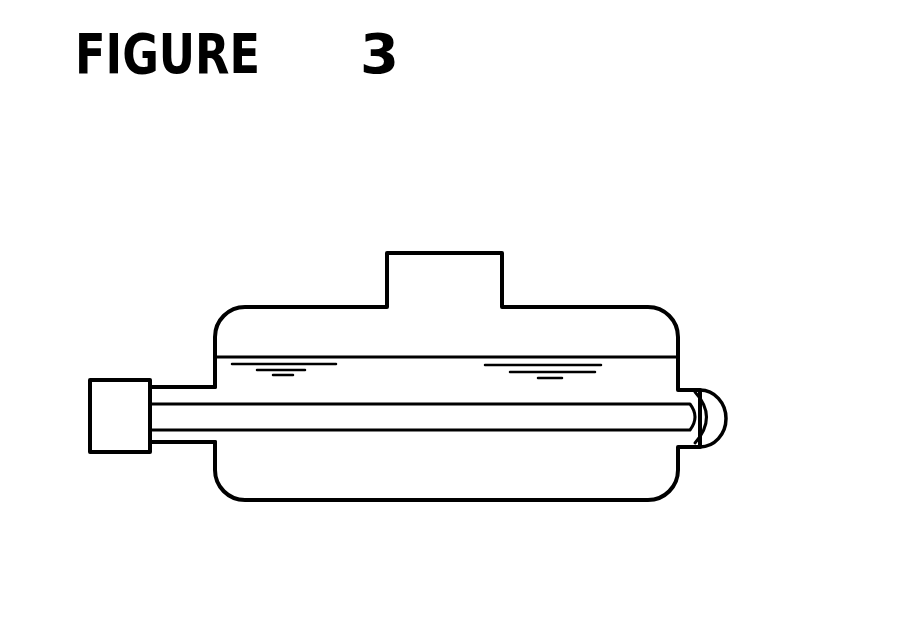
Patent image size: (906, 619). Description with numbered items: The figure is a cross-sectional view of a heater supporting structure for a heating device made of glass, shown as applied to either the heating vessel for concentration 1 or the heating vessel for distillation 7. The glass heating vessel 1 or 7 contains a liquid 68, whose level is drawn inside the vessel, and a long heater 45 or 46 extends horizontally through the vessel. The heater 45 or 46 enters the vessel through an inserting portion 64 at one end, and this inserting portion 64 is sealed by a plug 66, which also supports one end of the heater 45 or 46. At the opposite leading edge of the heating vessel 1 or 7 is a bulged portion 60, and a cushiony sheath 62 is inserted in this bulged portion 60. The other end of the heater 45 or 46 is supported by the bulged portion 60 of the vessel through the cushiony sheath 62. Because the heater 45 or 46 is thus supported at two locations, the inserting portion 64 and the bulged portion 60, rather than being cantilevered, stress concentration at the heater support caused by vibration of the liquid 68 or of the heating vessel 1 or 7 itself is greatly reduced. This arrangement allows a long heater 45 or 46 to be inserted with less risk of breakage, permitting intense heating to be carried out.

The heating vessel for concentration 1 is at (425, 416).
The heating vessel for distillation 7 is at (365, 500).
The heater 45 is at (422, 484).
The heater 46 is at (502, 430).
The bulged portion 60 is at (712, 390).
The cushiony sheath 62 is at (697, 437).
The inserting portion 64 is at (193, 383).
The plug 66 is at (118, 402).
The liquid 68 is at (572, 377).